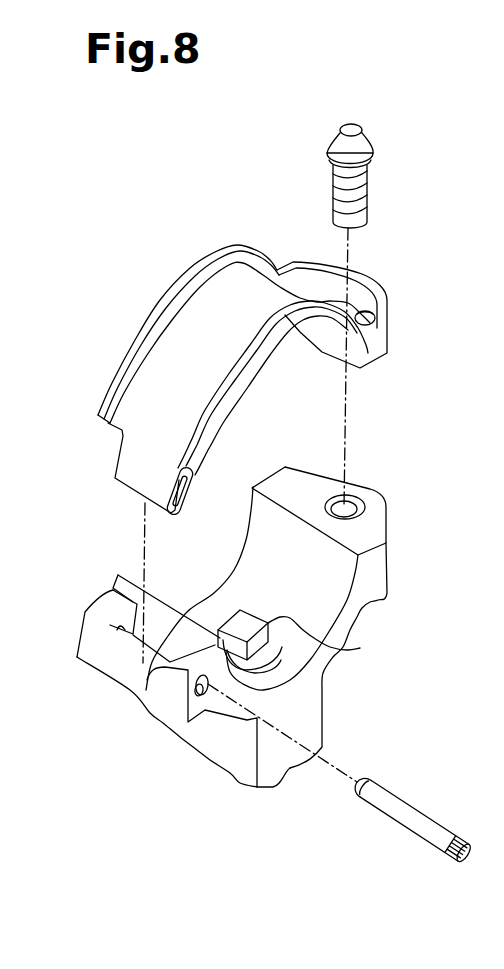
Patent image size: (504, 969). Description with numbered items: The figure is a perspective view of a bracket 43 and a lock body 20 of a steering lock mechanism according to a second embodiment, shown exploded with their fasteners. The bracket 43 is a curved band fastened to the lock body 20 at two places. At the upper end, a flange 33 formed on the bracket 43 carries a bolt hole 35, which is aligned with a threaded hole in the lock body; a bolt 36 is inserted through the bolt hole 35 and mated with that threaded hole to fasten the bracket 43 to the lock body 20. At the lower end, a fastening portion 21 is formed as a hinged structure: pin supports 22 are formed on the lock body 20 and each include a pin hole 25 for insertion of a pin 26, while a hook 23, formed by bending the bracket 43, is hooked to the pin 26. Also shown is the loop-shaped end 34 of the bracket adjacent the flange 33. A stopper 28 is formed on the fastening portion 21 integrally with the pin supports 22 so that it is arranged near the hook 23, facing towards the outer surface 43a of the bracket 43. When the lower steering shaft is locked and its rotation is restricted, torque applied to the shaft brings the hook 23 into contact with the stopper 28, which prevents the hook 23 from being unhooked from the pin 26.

The body 20 is at (347, 650).
The fastening portion 21 is at (99, 739).
The pin supports 22 is at (105, 607).
The hook 23 is at (177, 514).
The pin hole 25 is at (203, 692).
The pin 26 is at (411, 815).
The stopper 28 is at (123, 650).
The flange 33 is at (312, 300).
The strap loop arm 34 is at (357, 273).
The bolt hole 35 is at (365, 320).
The bolt 36 is at (364, 132).
The bracket 43 is at (177, 337).
The outer surface 43a is at (137, 462).